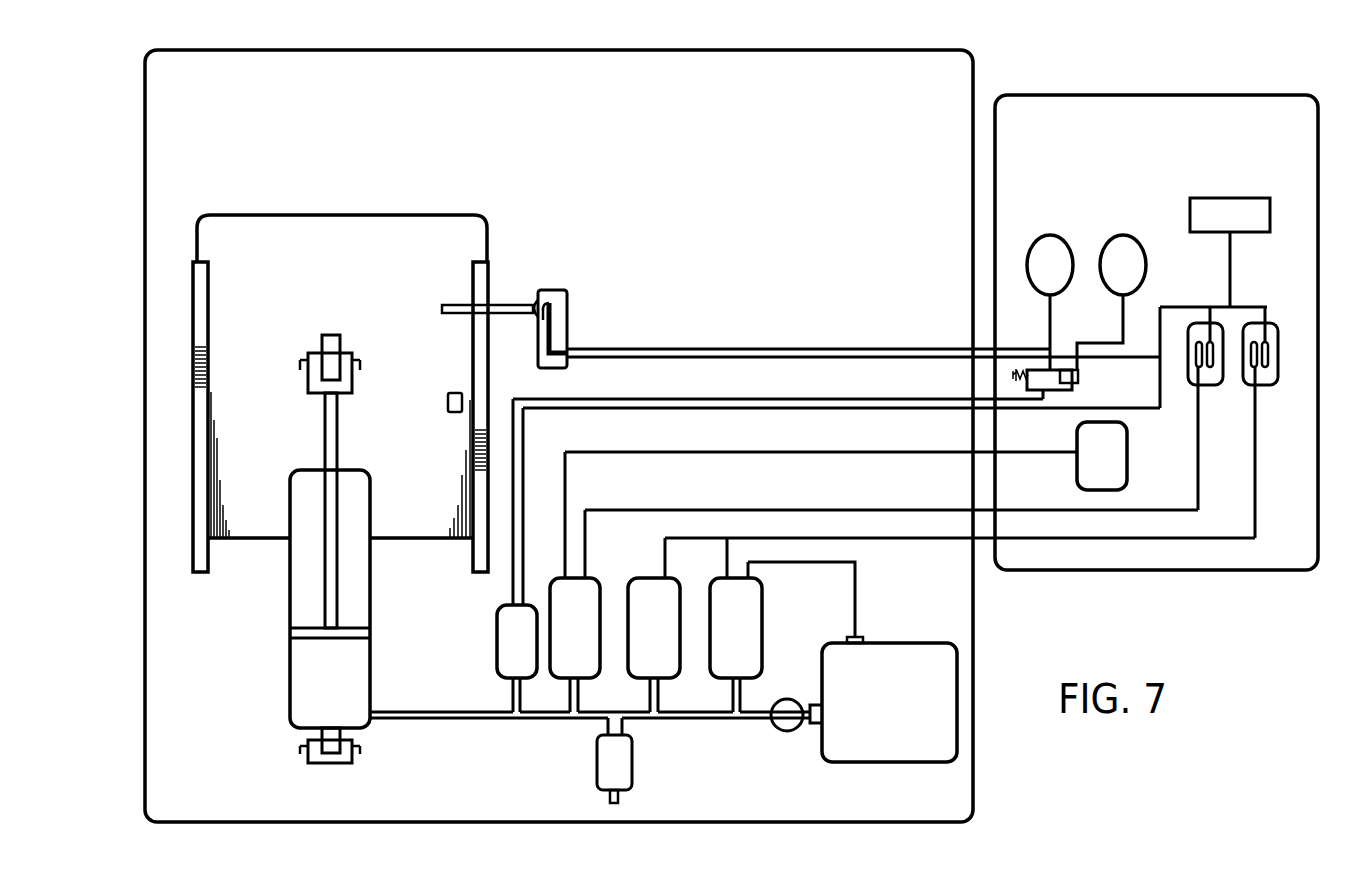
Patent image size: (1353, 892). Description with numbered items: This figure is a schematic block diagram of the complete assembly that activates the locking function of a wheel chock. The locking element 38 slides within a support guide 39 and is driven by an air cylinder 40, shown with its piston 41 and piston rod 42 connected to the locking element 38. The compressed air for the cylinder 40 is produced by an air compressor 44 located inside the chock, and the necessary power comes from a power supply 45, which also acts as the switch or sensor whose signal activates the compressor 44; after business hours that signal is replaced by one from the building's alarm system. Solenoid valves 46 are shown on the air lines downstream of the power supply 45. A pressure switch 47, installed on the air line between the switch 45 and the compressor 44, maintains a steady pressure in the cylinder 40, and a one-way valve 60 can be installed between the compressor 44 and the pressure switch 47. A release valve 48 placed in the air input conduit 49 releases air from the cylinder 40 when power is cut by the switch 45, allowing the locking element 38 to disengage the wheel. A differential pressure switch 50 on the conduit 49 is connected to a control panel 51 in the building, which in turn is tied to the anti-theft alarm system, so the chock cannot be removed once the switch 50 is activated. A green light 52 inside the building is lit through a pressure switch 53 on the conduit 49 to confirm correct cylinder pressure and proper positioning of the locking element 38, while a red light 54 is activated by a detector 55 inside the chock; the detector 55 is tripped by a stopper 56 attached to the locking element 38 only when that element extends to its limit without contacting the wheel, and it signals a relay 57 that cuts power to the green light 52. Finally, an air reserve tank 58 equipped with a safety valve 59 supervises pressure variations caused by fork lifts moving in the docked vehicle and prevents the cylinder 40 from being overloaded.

The locking element 38 is at (398, 240).
The support guide 39 is at (197, 312).
The air cylinder 40 is at (290, 683).
The piston 41 is at (305, 630).
The piston rod 42 is at (337, 422).
The air compressor 44 is at (915, 660).
The power supply 45 is at (1232, 205).
The solenoid valves 46 is at (1215, 386).
The pressure switch 47 is at (752, 636).
The release valve 48 is at (672, 620).
The air input conduit 49 is at (472, 720).
The differential pressure switch 50 is at (598, 605).
The control panel 51 is at (1127, 460).
The green light 52 is at (1123, 248).
The pressure switch 53 is at (505, 627).
The red light 54 is at (1050, 248).
The detector 55 is at (548, 290).
The stopper 56 is at (452, 393).
The relay 57 is at (1078, 388).
The air reserve tank 58 is at (632, 752).
The safety valve 59 is at (608, 799).
The one-way valve 60 is at (782, 731).